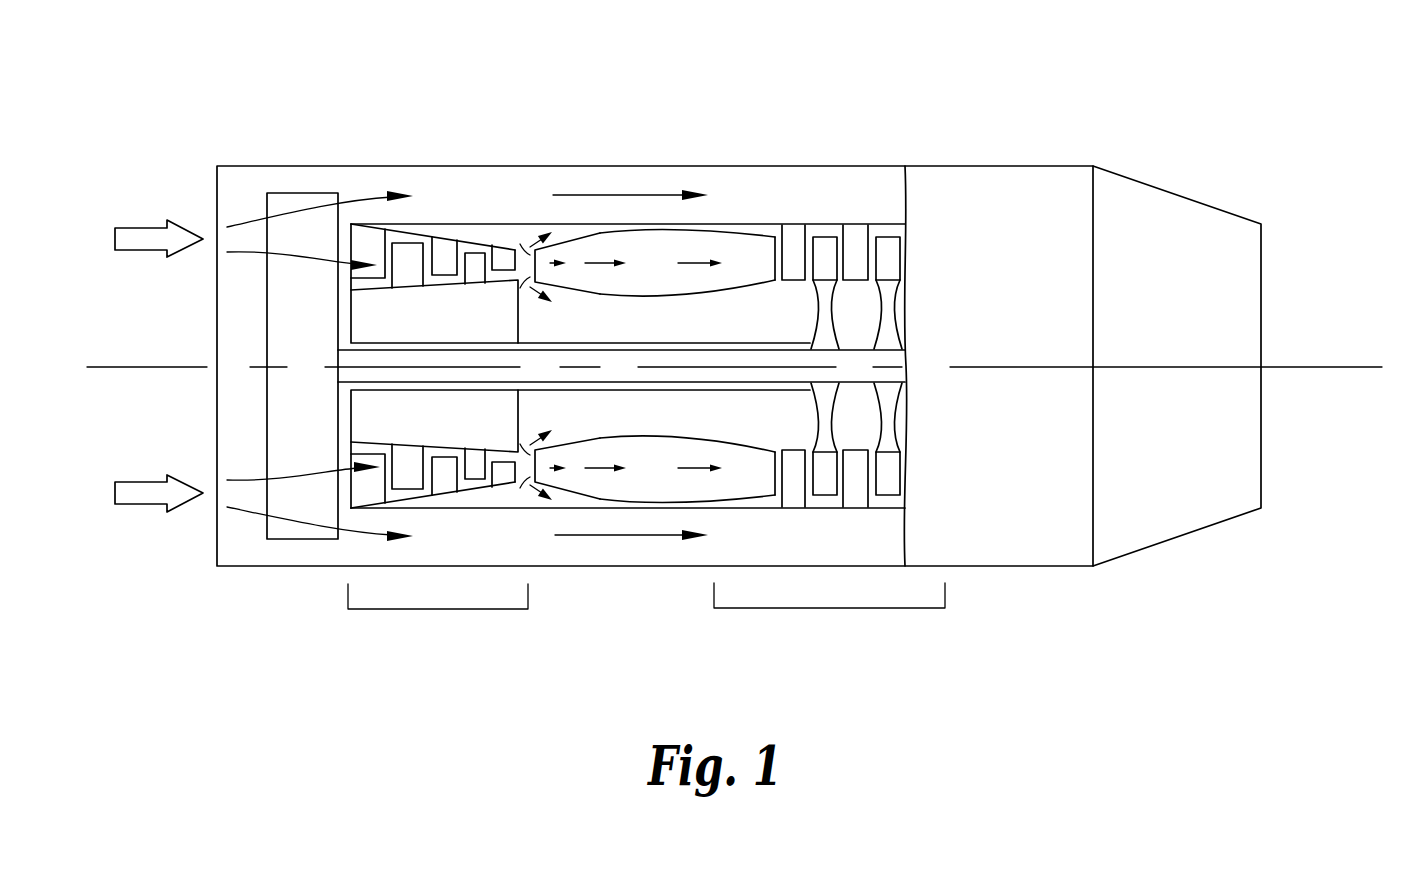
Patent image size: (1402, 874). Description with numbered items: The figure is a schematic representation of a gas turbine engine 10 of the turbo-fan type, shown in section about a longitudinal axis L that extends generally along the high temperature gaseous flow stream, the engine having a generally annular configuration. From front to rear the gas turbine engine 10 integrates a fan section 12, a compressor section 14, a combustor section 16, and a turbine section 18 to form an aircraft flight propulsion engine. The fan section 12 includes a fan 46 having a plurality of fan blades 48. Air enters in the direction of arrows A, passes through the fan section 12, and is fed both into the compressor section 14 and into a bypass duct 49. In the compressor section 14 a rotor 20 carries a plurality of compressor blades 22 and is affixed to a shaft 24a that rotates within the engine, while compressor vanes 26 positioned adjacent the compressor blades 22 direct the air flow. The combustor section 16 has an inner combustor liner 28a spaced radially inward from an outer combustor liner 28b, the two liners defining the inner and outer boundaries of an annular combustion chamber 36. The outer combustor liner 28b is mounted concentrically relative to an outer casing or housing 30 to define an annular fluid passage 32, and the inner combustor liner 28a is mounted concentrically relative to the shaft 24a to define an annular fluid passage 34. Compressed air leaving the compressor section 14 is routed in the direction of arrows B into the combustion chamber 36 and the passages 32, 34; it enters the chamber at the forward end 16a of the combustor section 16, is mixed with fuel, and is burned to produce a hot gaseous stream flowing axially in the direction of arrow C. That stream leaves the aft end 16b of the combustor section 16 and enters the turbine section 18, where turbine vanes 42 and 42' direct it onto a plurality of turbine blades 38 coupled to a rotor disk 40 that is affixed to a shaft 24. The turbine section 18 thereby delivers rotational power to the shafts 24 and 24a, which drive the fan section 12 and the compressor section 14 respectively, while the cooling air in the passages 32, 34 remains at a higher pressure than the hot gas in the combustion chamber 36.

The gas turbine engine 10 is at (863, 86).
The fan section 12 is at (287, 542).
The compressor section 14 is at (443, 614).
The combustor section 16 is at (720, 513).
The forward end of the combustor section 16a is at (523, 245).
The aft end of the combustor section 16b is at (783, 240).
The turbine section 18 is at (922, 617).
The rotor 20 is at (377, 328).
The compressor blades 22 is at (447, 248).
The shaft 24 is at (633, 372).
The shaft 24a is at (583, 343).
The compressor vanes 26 is at (367, 233).
The inner combustor liner 28a is at (726, 296).
The outer combustor liner 28b is at (588, 229).
The outer casing 30 is at (655, 223).
The annular fluid passage 32 is at (560, 230).
The annular fluid passage 34 is at (685, 325).
The combustion chamber 36 is at (657, 277).
The turbine blades 38 is at (825, 480).
The rotor disk 40 is at (825, 423).
The turbine vanes 42 is at (818, 299).
The turbine vanes 42' is at (892, 308).
The fan 46 is at (265, 408).
The fan blades 48 is at (288, 240).
The bypass duct 49 is at (503, 205).
The arrows indicating inlet air direction A is at (131, 367).
The arrows indicating compressed air direction B is at (542, 365).
The arrow indicating hot gas flow direction C is at (715, 366).
The longitudinal axis L is at (1322, 368).